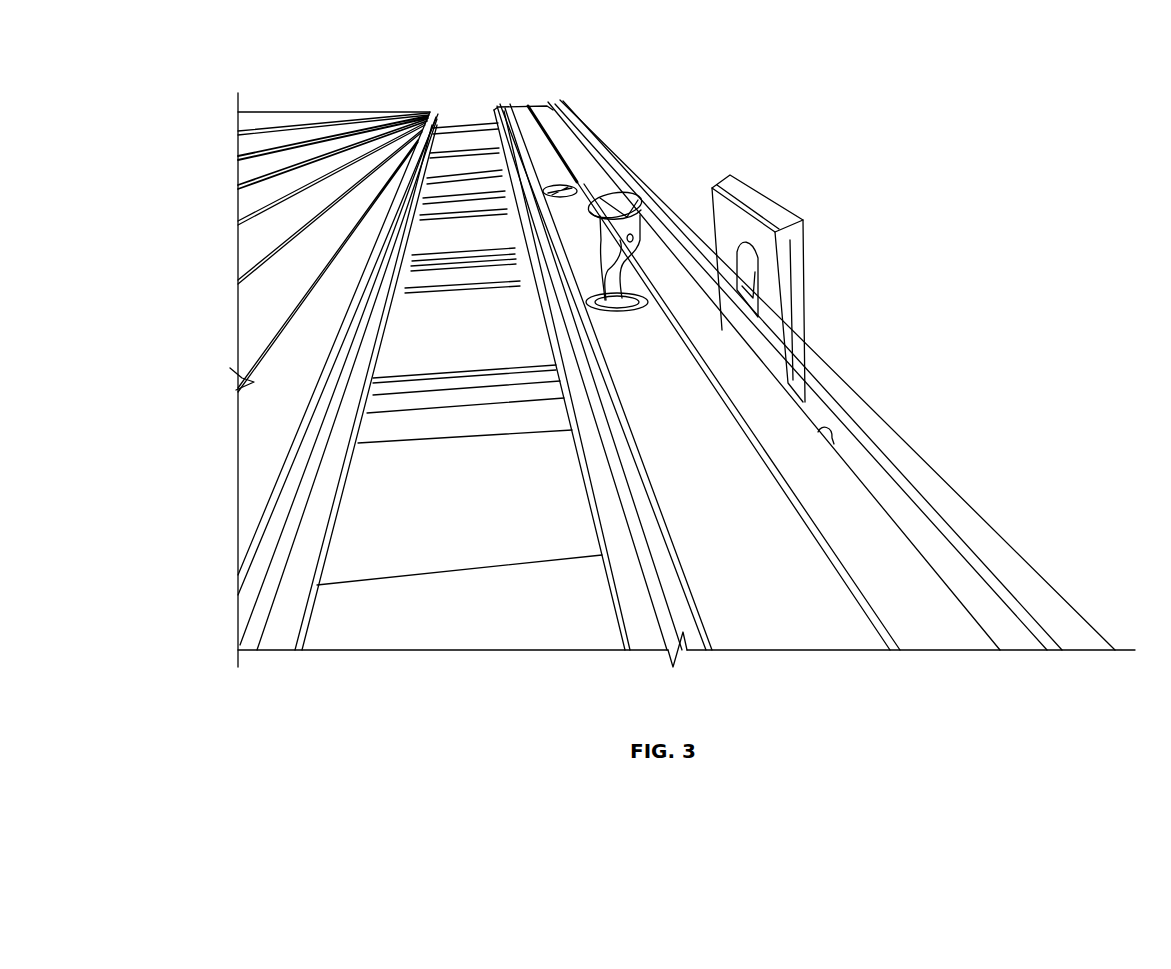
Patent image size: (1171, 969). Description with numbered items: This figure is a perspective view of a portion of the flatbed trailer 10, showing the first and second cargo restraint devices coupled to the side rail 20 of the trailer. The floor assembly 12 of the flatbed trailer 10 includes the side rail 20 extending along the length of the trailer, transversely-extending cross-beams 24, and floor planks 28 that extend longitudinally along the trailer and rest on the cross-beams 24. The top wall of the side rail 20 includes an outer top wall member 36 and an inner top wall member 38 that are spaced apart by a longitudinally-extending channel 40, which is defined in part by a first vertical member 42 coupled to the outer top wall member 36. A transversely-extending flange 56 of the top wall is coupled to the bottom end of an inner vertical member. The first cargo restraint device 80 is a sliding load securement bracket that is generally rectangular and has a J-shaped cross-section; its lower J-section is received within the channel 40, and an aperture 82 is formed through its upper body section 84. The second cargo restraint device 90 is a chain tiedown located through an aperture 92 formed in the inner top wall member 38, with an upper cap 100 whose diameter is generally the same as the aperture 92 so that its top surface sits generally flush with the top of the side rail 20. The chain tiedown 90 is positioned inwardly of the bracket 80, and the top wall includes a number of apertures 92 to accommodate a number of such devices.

The flatbed trailer 10 is at (223, 70).
The floor assembly 12 is at (239, 301).
The side rail 20 is at (1095, 661).
The cross-beams 24 is at (438, 533).
The floor planks 28 is at (247, 486).
The outer top wall member 36 is at (1050, 610).
The inner top wall member 38 is at (773, 624).
The channel 40 is at (1004, 628).
The first vertical member 42 is at (868, 467).
The flange 56 is at (635, 617).
The first cargo restraint device 80 is at (787, 198).
The aperture 82 is at (746, 242).
The upper body section 84 is at (798, 262).
The second cargo restraint device 90 is at (570, 176).
The aperture 92 is at (548, 184).
The upper cap 100 is at (625, 200).